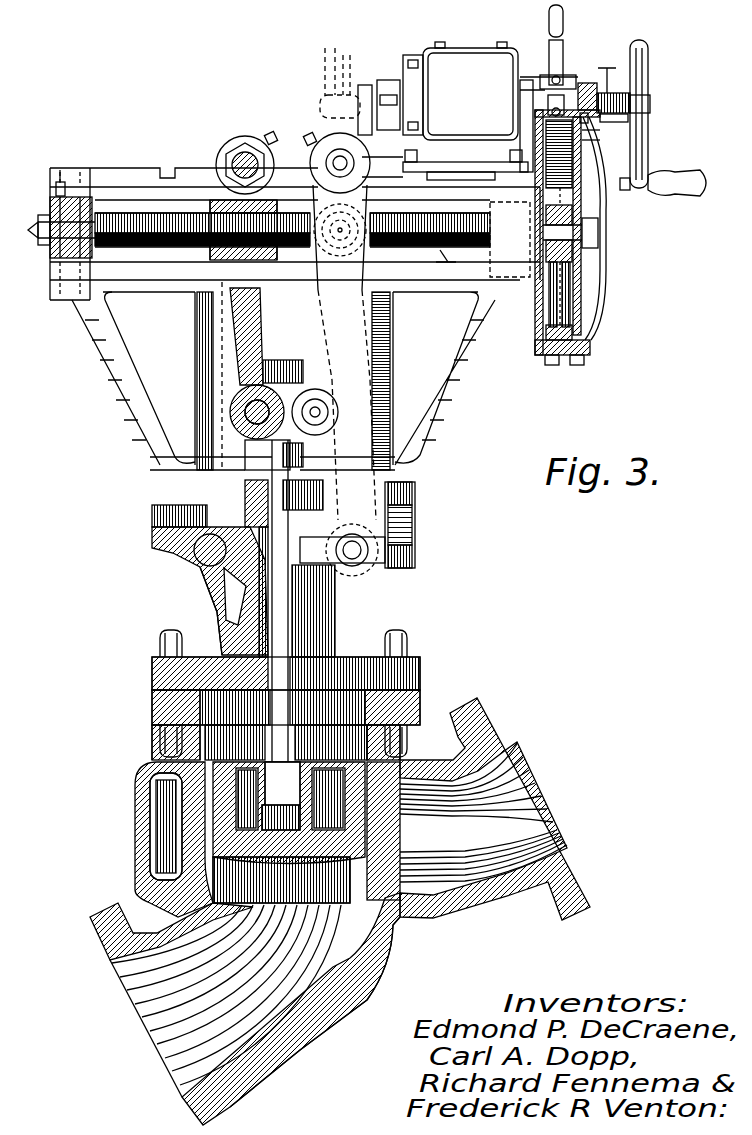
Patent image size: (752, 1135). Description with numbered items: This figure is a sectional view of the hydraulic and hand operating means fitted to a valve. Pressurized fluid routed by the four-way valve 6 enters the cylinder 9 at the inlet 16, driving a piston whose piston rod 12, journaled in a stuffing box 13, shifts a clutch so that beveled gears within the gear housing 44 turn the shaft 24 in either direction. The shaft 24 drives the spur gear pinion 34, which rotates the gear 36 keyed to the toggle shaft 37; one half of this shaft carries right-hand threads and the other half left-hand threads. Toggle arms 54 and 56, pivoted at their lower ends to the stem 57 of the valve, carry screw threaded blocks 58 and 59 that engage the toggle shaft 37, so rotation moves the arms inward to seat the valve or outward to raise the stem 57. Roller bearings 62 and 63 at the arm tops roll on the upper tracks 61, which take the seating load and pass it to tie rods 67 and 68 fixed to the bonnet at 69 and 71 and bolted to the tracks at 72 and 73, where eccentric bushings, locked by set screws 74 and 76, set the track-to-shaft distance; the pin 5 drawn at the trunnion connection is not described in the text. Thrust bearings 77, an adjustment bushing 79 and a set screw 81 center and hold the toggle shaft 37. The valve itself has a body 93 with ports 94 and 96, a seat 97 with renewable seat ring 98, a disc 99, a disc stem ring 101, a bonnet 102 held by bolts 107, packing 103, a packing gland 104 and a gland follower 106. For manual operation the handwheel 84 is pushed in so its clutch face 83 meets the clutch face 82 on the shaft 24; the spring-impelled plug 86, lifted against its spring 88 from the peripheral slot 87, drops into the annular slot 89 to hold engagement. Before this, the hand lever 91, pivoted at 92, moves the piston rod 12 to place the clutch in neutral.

The pivot pin 5 is at (338, 156).
The four-way valve 6 is at (342, 348).
The cylinder 9 is at (347, 95).
The piston rod 12 is at (520, 100).
The stuffing box 13 is at (397, 80).
The cylinder inlet 16 is at (383, 85).
The shaft 24 is at (632, 105).
The spur gear pinion 34 is at (555, 108).
The gear 36 is at (582, 323).
The toggle shaft 37 is at (444, 250).
The gear housing 44 is at (407, 177).
The toggle arm 54 is at (257, 330).
The toggle arm 56 is at (323, 337).
The stem 57 is at (273, 458).
The screw threaded block 58 is at (220, 253).
The screw threaded block 59 is at (379, 290).
The upper tracks 61 is at (380, 200).
The roller bearings 62 is at (207, 187).
The roller bearings 63 is at (373, 217).
The tie rods 67 is at (223, 490).
The tie rods 68 is at (416, 495).
The tie rod attachment point 69 is at (213, 560).
The tie rod attachment point 71 is at (378, 572).
The connecting point with eccentric bushing 72 is at (233, 147).
The connecting point with eccentric bushing 73 is at (330, 152).
The set screws 74 is at (268, 134).
The set screws 76 is at (308, 136).
The thrust bearings 77 is at (43, 247).
The adjustment bushing 79 is at (43, 217).
The set screw 81 is at (62, 180).
The clutch face 82 is at (582, 96).
The clutch face 83 is at (603, 143).
The handwheel 84 is at (650, 170).
The spring-impelled plug 86 is at (607, 67).
The peripheral slot 87 is at (600, 137).
The spring 88 is at (620, 93).
The annular slot 89 is at (600, 130).
The hand lever 91 is at (560, 43).
The pivot 92 is at (552, 82).
The body 93 is at (385, 992).
The port 94 is at (152, 1020).
The port 96 is at (530, 808).
The seat 97 is at (393, 923).
The renewable seat ring 98 is at (393, 862).
The disc 99 is at (210, 820).
The disc stem ring 101 is at (227, 757).
The bonnet 102 is at (203, 617).
The packing 103 is at (240, 590).
The packing gland 104 is at (253, 523).
The gland follower 106 is at (307, 490).
The bolts 107 is at (157, 650).